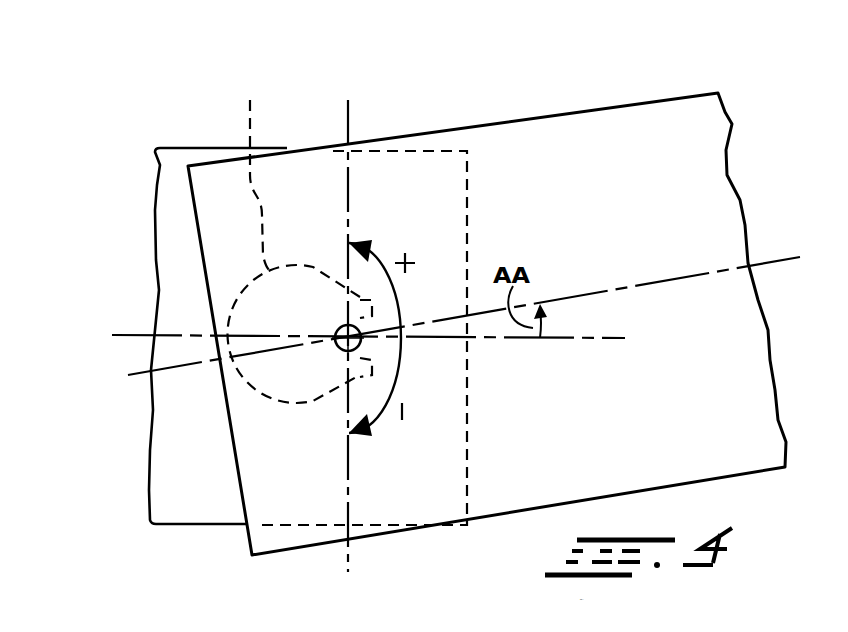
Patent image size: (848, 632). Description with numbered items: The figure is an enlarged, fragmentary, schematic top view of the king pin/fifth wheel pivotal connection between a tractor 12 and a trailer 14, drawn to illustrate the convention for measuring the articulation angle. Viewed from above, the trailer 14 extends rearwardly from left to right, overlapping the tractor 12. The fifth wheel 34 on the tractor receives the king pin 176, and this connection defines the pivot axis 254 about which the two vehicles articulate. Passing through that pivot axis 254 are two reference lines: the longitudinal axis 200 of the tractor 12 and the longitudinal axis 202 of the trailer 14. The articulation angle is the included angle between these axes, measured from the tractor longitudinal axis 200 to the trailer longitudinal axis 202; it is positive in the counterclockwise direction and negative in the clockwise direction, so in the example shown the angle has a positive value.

The tractor 12 is at (172, 188).
The trailer 14 is at (593, 135).
The fifth wheel 34 is at (332, 286).
The king pin 176 is at (354, 344).
The longitudinal axis of the tractor 200 is at (612, 346).
The longitudinal axis of the trailer 202 is at (610, 290).
The pivot axis 254 is at (342, 348).